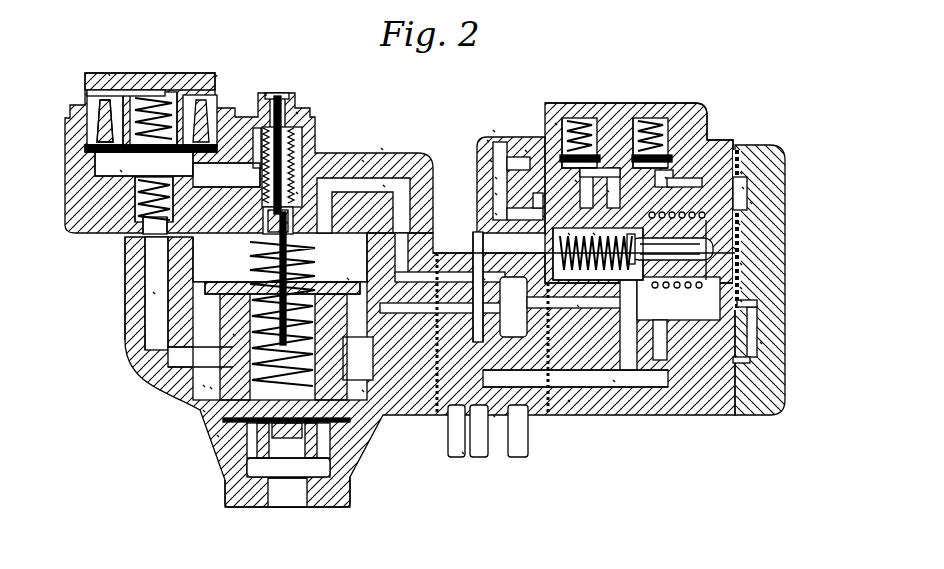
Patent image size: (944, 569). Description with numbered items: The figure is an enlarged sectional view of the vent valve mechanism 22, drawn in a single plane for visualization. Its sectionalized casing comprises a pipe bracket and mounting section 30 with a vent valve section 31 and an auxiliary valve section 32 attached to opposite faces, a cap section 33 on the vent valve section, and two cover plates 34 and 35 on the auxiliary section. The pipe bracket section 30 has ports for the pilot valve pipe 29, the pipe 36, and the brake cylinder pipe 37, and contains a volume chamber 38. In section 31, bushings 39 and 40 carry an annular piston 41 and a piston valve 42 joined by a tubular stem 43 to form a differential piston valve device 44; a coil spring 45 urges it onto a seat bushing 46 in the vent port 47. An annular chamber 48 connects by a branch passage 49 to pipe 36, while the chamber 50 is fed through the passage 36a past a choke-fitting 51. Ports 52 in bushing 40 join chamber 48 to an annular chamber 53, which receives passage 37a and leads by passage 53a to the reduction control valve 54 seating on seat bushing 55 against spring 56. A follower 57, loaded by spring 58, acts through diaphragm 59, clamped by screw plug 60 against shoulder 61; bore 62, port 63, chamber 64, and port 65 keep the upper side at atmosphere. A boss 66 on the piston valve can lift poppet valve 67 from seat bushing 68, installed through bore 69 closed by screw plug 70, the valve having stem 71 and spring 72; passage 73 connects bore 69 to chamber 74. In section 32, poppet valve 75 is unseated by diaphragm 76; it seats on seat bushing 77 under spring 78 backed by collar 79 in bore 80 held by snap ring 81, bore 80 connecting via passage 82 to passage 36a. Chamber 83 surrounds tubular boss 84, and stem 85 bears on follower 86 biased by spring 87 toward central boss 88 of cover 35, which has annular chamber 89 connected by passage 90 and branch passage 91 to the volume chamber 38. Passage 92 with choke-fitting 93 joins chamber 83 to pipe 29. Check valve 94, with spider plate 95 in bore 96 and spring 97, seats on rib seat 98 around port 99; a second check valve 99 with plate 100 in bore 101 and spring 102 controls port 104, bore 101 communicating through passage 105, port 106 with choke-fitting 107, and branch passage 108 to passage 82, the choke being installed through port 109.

The vent valve mechanism 22 is at (381, 148).
The pilot valve pipe 29 is at (522, 440).
The pipe bracket and mounting section 30 is at (493, 130).
The vent valve section 31 is at (127, 335).
The auxiliary valve section 32 is at (568, 400).
The cap section 33 is at (362, 160).
The cover plate 34 is at (618, 103).
The cover plate 35 is at (762, 145).
The pipe 36 is at (483, 452).
The passage 36a is at (383, 185).
The brake cylinder pipe 37 is at (462, 452).
The passage 37a is at (423, 400).
The volume chamber 38 is at (504, 336).
The bushing 39 is at (187, 262).
The bushing 40 is at (203, 385).
The annular piston 41 is at (347, 278).
The piston valve 42 is at (362, 400).
The tubular stem 43 is at (237, 357).
The differential piston valve device 44 is at (333, 347).
The coil spring 45 is at (253, 259).
The seat bushing 46 is at (248, 450).
The vent port 47 is at (300, 500).
The annular chamber 48 is at (233, 334).
The branch passage 49 is at (463, 308).
The chamber 50 is at (328, 252).
The choke-fitting 51 is at (483, 278).
The ports 52 is at (330, 420).
The annular chamber 53 is at (210, 387).
The passage 53a is at (153, 292).
The reduction control valve 54 is at (125, 186).
The seat bushing 55 is at (125, 207).
The coil spring 56 is at (127, 243).
The piston type follower 57 is at (217, 75).
The coil spring 58 is at (148, 92).
The flexible diaphragm 59 is at (98, 160).
The screw plug 60 is at (117, 73).
The shoulder 61 is at (120, 170).
The bore 62 is at (170, 97).
The port 63 is at (108, 73).
The annular chamber 64 is at (103, 127).
The port 65 is at (103, 100).
The boss 66 is at (217, 435).
The poppet valve 67 is at (258, 224).
The seat bushing 68 is at (296, 192).
The bore 69 is at (296, 112).
The screw plug 70 is at (266, 93).
The cylindrical stem 71 is at (279, 120).
The coil spring 72 is at (291, 163).
The passage 73 is at (230, 168).
The chamber 74 is at (117, 173).
The poppet valve 75 is at (687, 216).
The flexible diaphragm 76 is at (750, 202).
The seat bushing 77 is at (707, 216).
The coil spring 78 is at (593, 233).
The collar 79 is at (568, 233).
The bore 80 is at (600, 270).
The snap ring 81 is at (557, 270).
The passage 82 is at (473, 250).
The chamber 83 is at (740, 172).
The tubular boss 84 is at (665, 282).
The stem 85 is at (733, 247).
The follower 86 is at (738, 223).
The coil spring 87 is at (740, 287).
The central boss 88 is at (740, 263).
The annular chamber 89 is at (742, 187).
The passage 90 is at (760, 342).
The branch passage 91 is at (577, 305).
The passage 92 is at (613, 380).
The choke-fitting 93 is at (505, 382).
The check valve 94 is at (688, 157).
The spider plate 95 is at (665, 177).
The bore 96 is at (661, 143).
The coil spring 97 is at (656, 118).
The annular rib seat 98 is at (653, 212).
The port 99 is at (606, 118).
The spider plate 100 is at (525, 150).
The bore 101 is at (555, 123).
The coil spring 102 is at (583, 118).
The port and passage 104 is at (603, 195).
The passage 105 is at (487, 140).
The port 106 is at (495, 177).
The choke-fitting 107 is at (495, 193).
The branch passage 108 is at (495, 213).
The port 109 is at (490, 160).